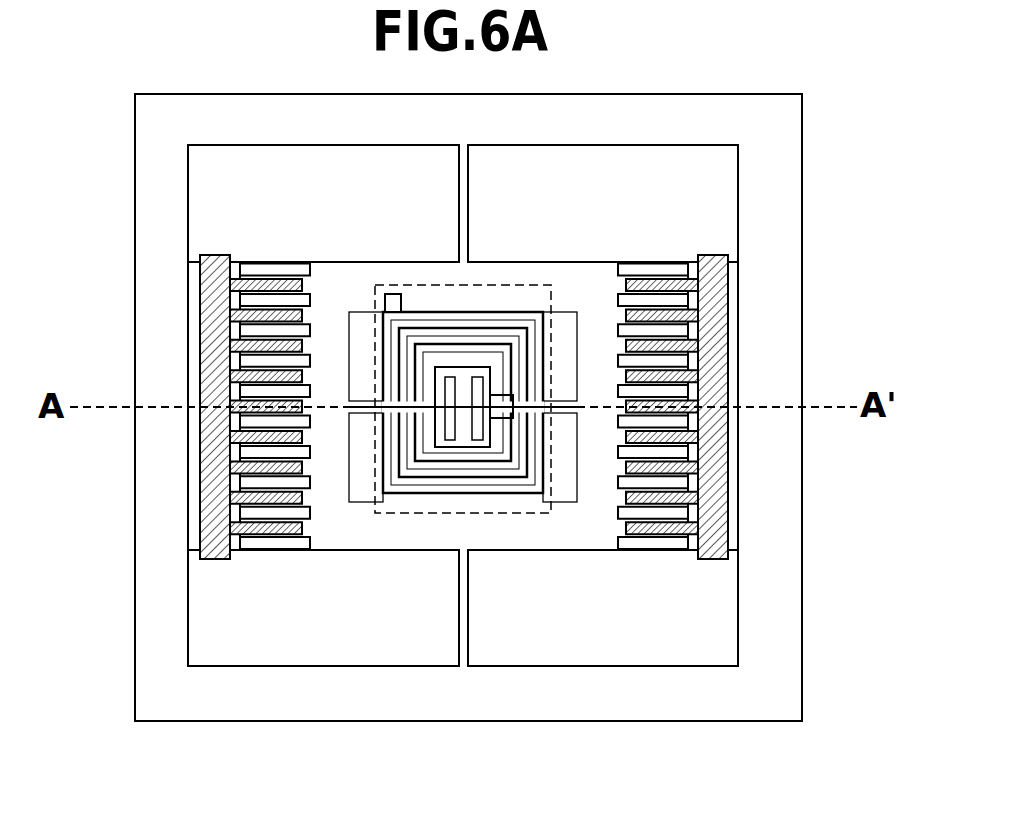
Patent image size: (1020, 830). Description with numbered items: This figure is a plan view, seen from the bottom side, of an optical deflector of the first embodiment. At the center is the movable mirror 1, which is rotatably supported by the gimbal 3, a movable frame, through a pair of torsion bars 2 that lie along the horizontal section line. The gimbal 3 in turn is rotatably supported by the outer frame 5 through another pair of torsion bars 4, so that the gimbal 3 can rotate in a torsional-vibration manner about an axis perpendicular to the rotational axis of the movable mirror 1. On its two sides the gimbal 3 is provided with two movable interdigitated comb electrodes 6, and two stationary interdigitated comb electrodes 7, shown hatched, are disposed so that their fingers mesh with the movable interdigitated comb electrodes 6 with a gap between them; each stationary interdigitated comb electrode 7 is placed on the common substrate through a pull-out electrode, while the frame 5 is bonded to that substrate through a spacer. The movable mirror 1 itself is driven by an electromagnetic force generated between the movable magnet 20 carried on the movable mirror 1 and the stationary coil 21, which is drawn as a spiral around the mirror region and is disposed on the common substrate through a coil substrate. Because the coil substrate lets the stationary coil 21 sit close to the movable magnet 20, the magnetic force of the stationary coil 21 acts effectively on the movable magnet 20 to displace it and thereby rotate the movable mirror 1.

The movable mirror 1 is at (455, 367).
The torsion bars 2 is at (363, 413).
The gimbal 3 is at (593, 537).
The torsion bars 4 is at (468, 172).
The frame 5 is at (593, 703).
The movable interdigitated comb electrode 6 is at (635, 262).
The stationary interdigitated comb electrode 7 is at (728, 340).
The movable magnet 20 is at (450, 430).
The stationary coil 21 is at (428, 320).